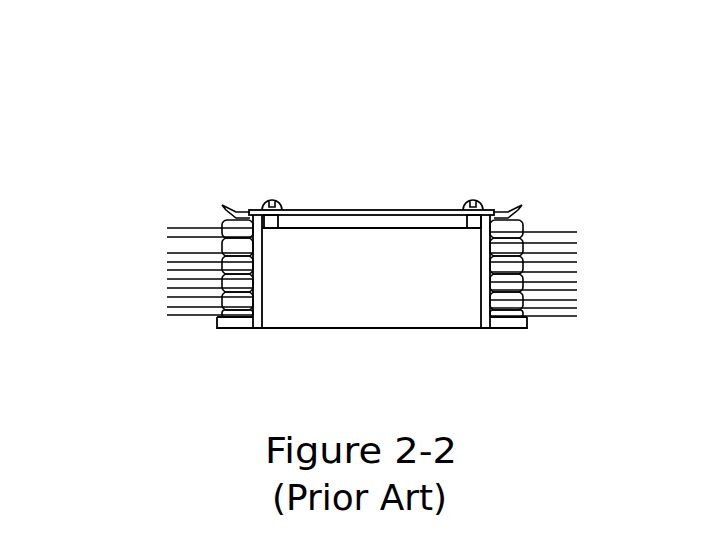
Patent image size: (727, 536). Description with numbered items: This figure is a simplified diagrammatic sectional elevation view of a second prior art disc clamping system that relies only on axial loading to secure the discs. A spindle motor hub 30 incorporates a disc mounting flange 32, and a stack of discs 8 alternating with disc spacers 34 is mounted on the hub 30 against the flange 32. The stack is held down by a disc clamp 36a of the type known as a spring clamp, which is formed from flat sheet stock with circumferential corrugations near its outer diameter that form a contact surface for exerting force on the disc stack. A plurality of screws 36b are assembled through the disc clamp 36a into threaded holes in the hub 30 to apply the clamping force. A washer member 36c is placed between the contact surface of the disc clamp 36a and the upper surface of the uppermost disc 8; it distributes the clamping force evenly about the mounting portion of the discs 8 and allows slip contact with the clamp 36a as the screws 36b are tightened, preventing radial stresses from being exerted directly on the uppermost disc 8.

The spindle motor hub 30 is at (367, 218).
The disc mounting flange 32 is at (512, 322).
The disc spacers 34 is at (242, 297).
The discs 8 is at (558, 310).
The disc clamp 36a is at (248, 210).
The screws 36b is at (482, 207).
The washer member 36c is at (521, 212).